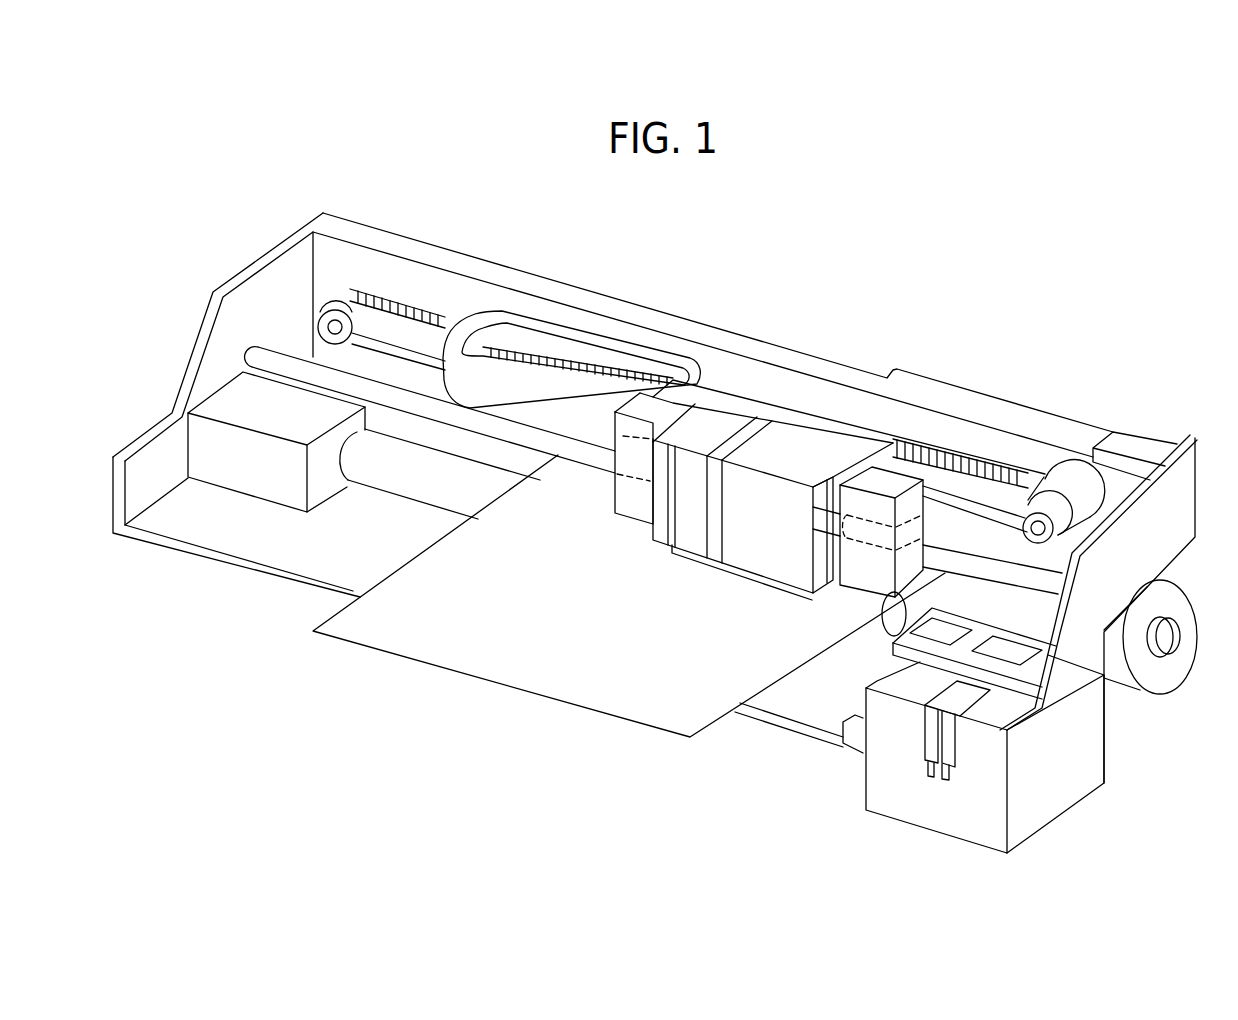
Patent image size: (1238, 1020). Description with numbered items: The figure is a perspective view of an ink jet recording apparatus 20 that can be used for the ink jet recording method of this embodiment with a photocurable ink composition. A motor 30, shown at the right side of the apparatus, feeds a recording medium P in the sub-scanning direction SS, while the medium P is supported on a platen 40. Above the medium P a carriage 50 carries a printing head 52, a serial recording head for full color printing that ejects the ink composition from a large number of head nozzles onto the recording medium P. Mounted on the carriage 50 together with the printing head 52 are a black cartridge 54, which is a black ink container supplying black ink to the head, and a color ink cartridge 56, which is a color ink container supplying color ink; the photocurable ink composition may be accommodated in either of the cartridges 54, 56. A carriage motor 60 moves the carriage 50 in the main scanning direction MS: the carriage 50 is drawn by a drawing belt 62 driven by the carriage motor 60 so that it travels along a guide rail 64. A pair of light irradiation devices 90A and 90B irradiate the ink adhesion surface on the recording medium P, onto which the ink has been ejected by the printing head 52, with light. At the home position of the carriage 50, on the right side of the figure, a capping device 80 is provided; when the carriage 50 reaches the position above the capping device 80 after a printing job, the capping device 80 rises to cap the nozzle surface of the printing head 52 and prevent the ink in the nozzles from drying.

The ink jet recording apparatus 20 is at (960, 268).
The motor 30 is at (1167, 640).
The platen 40 is at (397, 478).
The carriage 50 is at (706, 568).
The printing head 52 is at (790, 582).
The black cartridge 54 is at (737, 413).
The color ink cartridge 56 is at (812, 447).
The carriage motor 60 is at (1073, 480).
The drawing belt 62 is at (385, 320).
The guide rail 64 is at (288, 360).
The capping device 80 is at (984, 632).
The light irradiation device 90A is at (600, 483).
The light irradiation device 90B is at (865, 588).
The recording medium P is at (652, 688).
The main scanning direction MS is at (560, 533).
The sub-scanning direction SS is at (520, 702).